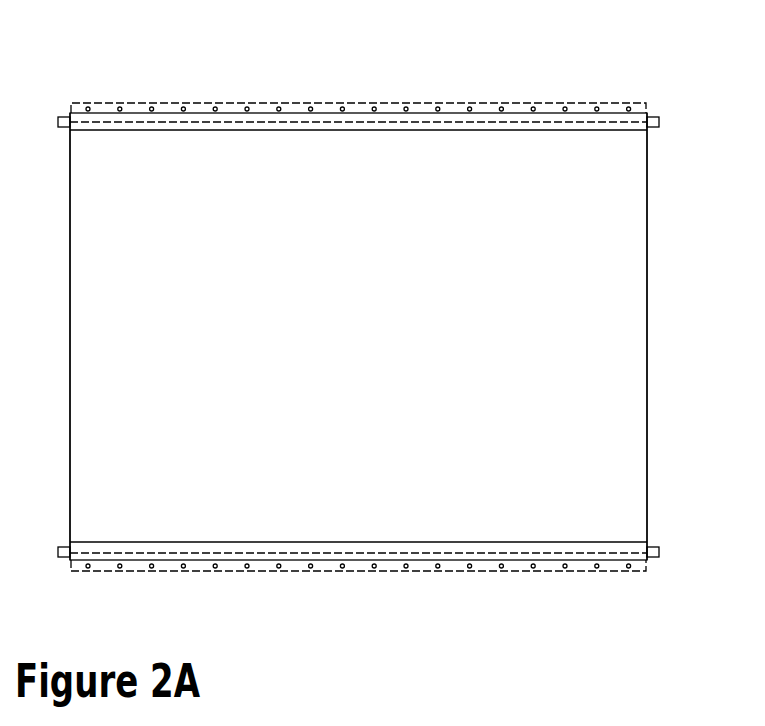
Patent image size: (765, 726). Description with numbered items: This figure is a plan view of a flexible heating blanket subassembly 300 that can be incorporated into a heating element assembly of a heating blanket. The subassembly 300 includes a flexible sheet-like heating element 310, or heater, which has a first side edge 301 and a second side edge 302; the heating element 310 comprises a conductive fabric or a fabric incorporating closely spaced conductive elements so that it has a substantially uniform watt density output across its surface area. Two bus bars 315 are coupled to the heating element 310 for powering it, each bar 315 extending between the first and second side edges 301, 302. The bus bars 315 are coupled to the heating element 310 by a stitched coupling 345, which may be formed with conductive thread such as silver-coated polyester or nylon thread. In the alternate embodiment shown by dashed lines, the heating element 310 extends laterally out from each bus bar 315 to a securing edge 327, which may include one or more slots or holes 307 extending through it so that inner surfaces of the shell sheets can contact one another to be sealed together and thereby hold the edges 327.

The heating blanket subassembly 300 is at (108, 66).
The first side edge 301 is at (69, 184).
The second side edge 302 is at (648, 194).
The slots or holes 307 is at (281, 108).
The heating element 310 is at (367, 343).
The bus bars 315 is at (61, 116).
The securing edge 327 is at (230, 108).
The stitched coupling 345 is at (172, 120).